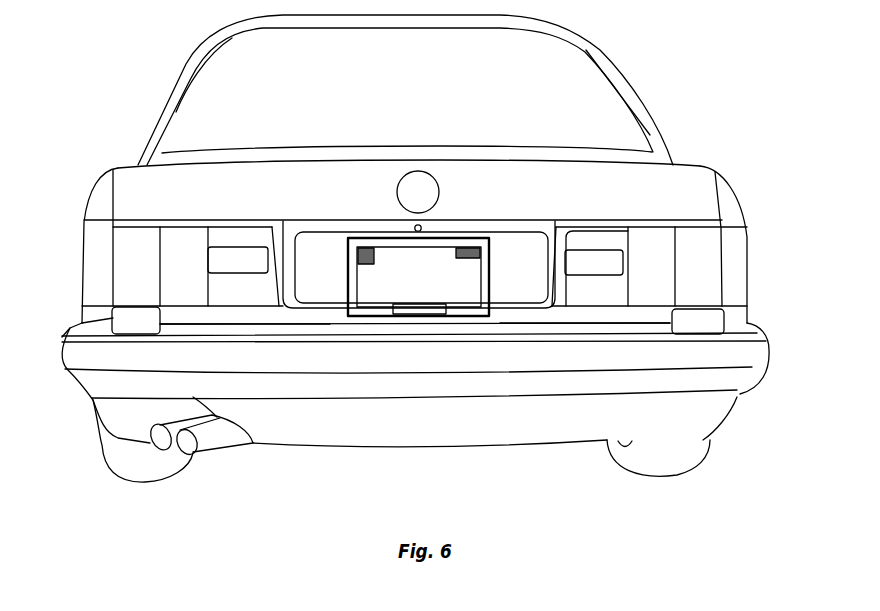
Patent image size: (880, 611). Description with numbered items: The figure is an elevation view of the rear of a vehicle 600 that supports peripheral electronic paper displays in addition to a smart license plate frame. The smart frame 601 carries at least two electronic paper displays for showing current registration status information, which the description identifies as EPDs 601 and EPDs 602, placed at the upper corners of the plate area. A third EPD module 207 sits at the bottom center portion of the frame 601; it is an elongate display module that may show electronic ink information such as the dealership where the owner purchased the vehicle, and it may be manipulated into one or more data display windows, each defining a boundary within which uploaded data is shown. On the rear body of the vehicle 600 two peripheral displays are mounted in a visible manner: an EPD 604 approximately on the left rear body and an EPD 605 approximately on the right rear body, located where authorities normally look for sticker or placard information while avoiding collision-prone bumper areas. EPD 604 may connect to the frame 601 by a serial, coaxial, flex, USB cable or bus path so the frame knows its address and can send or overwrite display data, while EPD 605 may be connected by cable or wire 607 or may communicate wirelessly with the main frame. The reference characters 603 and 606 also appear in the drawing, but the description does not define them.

The vehicle 600 is at (118, 131).
The smart frame 601 is at (457, 246).
The EPD 602 is at (367, 246).
The license plate 603 is at (488, 253).
The EPD 604 is at (77, 320).
The EPD 605 is at (698, 306).
The left bumper sensor region 606 is at (247, 324).
The cable or wire 607 is at (593, 326).
The EPD module 207 is at (422, 314).